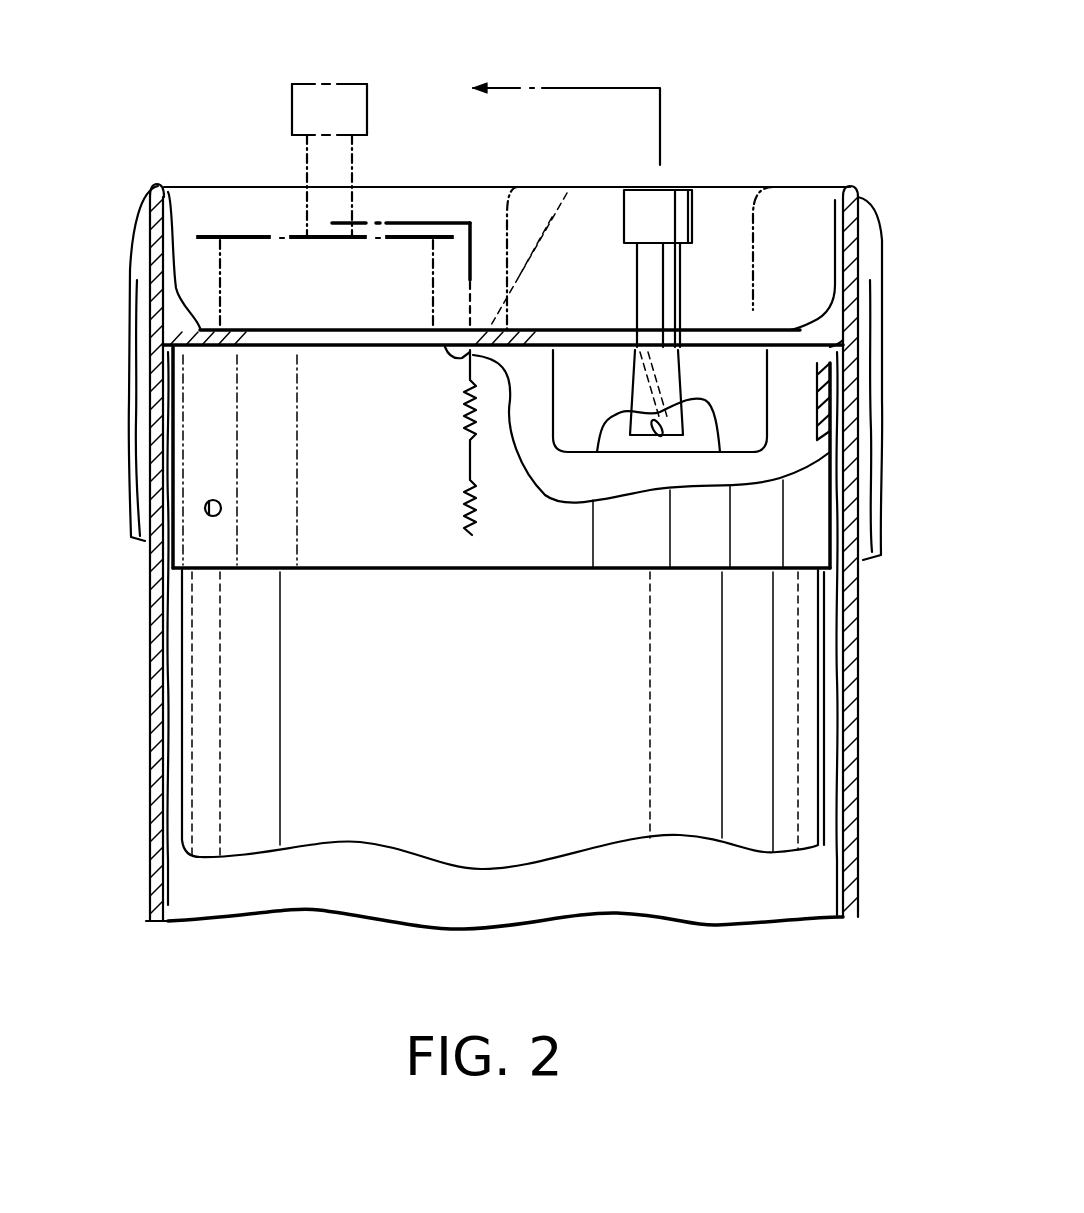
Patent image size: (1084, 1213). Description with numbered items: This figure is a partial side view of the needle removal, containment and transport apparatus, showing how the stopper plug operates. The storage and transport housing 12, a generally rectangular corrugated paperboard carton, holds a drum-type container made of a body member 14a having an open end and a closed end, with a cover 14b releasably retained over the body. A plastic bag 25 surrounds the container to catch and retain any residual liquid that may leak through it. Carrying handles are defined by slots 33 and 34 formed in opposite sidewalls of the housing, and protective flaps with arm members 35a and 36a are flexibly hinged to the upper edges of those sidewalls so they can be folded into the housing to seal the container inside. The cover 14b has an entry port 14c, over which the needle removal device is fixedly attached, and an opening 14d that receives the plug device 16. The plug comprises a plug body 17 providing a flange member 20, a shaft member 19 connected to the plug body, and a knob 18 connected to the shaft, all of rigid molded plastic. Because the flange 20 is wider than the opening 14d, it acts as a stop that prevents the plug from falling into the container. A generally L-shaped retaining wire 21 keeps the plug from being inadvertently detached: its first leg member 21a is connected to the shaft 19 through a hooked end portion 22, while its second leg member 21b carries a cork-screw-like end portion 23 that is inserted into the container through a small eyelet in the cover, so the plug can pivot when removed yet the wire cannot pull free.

The storage and transport housing 12 is at (147, 692).
The body member 14a is at (268, 813).
The cover 14b is at (197, 532).
The entry port 14c is at (453, 360).
The opening 14d is at (547, 353).
The plug device 16 is at (293, 115).
The plug body 17 is at (342, 257).
The knob 18 is at (330, 100).
The shaft member 19 is at (333, 168).
The flange member 20 is at (295, 235).
The retaining wire 21 is at (472, 223).
The first leg member 21a is at (398, 220).
The second leg member 21b is at (472, 270).
The hooked end portion 22 is at (643, 437).
The cork-screw-like end portion 23 is at (470, 520).
The plastic bag 25 is at (867, 205).
The slot 33 is at (855, 458).
The slot 34 is at (153, 453).
The arm member 35a is at (835, 213).
The arm member 36a is at (167, 280).